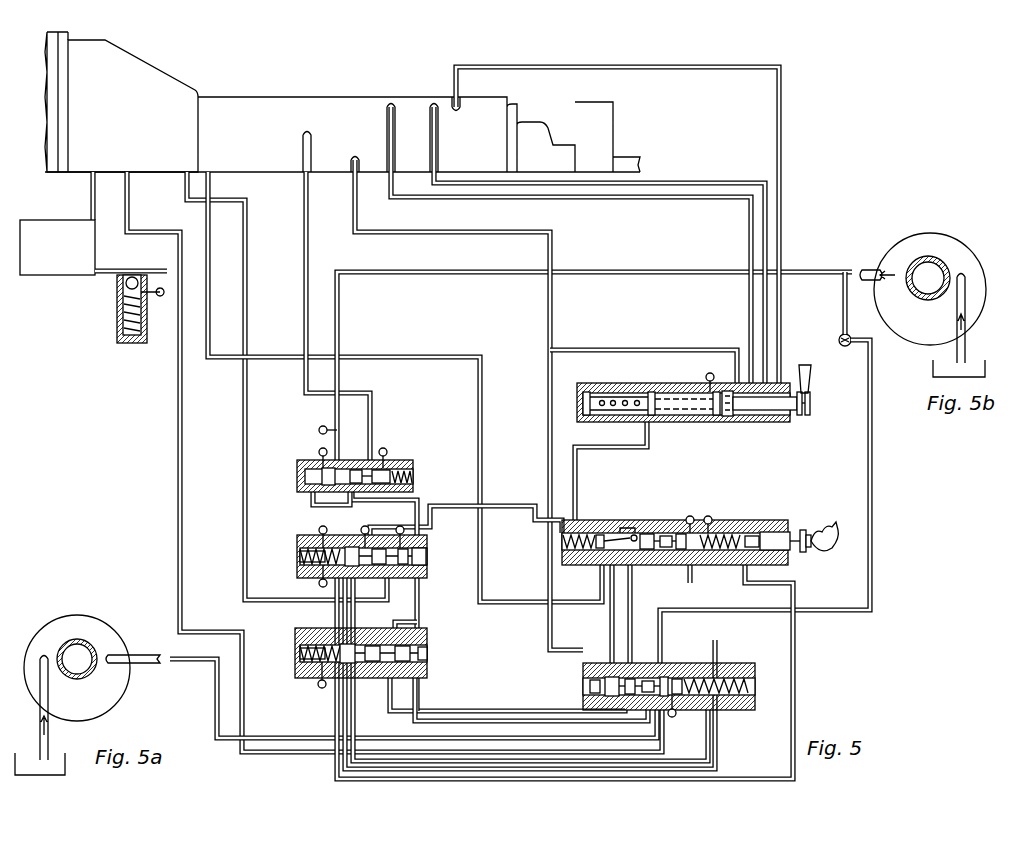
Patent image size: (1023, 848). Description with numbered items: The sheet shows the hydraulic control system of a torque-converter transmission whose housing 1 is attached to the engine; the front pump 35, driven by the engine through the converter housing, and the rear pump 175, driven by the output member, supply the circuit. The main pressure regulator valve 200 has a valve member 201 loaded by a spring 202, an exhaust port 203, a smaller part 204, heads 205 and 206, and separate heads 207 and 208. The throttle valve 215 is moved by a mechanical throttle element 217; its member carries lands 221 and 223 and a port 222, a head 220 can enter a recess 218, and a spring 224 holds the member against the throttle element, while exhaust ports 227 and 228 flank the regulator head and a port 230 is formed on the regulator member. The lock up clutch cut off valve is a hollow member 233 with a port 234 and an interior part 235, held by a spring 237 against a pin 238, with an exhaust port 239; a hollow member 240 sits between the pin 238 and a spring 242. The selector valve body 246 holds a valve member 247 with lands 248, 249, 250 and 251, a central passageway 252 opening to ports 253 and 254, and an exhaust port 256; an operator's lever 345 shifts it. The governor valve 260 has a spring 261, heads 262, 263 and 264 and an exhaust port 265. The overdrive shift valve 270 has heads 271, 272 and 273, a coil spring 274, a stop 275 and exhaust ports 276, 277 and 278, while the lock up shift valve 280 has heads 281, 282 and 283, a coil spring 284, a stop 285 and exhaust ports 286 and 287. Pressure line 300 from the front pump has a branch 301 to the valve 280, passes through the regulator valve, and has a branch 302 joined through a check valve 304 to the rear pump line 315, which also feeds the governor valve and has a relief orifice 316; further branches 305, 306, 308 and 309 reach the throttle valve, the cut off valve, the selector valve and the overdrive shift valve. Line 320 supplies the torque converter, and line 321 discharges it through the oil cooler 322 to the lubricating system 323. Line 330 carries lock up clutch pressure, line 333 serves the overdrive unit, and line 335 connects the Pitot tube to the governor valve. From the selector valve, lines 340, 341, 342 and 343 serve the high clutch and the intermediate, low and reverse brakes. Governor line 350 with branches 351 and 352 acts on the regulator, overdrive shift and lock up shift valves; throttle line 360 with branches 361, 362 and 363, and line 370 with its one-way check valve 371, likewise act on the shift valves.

In FIG. 5, the housing 1 is at (116, 62).
In FIG. 5a, the pump 35 is at (92, 628).
In FIG. 5b, the pump 175 is at (955, 252).
In FIG. 5, the main pressure regulator valve 200 is at (728, 712).
In FIG. 5, the valve member 201 is at (690, 660).
In FIG. 5, the spring 202 is at (740, 708).
In FIG. 5, the exhaust port 203 is at (676, 716).
In FIG. 5, the smaller part 204 is at (664, 676).
In FIG. 5, the head 205 is at (650, 680).
In FIG. 5, the head 206 is at (630, 678).
In FIG. 5, the head or valve member 207 is at (610, 676).
In FIG. 5, the head or valve member 208 is at (588, 687).
In FIG. 5, the throttle valve 215 is at (790, 565).
In FIG. 5, the mechanical element 217 is at (833, 540).
In FIG. 5, the recess 218 is at (803, 528).
In FIG. 5, the head 220 is at (812, 560).
In FIG. 5, the head or land 221 is at (778, 532).
In FIG. 5, the port 222 is at (752, 534).
In FIG. 5, the head or land 223 is at (758, 565).
In FIG. 5, the spring 224 is at (738, 534).
In FIG. 5, the exhaust port 227 is at (710, 516).
In FIG. 5, the exhaust port 228 is at (692, 516).
In FIG. 5, the port 230 is at (686, 552).
In FIG. 5, the hollow member 233 is at (614, 580).
In FIG. 5, the port 234 is at (626, 528).
In FIG. 5, the interior part 235 is at (628, 533).
In FIG. 5, the spring 237 is at (575, 551).
In FIG. 5, the pin 238 is at (678, 532).
In FIG. 5, the exhaust port 239 is at (598, 551).
In FIG. 5, the member 240 is at (662, 534).
In FIG. 5, the spring 242 is at (645, 552).
In FIG. 5, the body 246 is at (582, 385).
In FIG. 5, the valve member 247 is at (812, 409).
In FIG. 5, the land 248 is at (590, 392).
In FIG. 5, the land 249 is at (650, 392).
In FIG. 5, the land 250 is at (716, 416).
In FIG. 5, the land 251 is at (724, 418).
In FIG. 5, the central passageway 252 is at (682, 392).
In FIG. 5, the ports 253 is at (616, 410).
In FIG. 5, the ports 254 is at (733, 412).
In FIG. 5, the exhaust port 256 is at (716, 372).
In FIG. 5, the governor valve 260 is at (413, 466).
In FIG. 5, the spring 261 is at (414, 473).
In FIG. 5, the head 262 is at (378, 452).
In FIG. 5, the head 263 is at (338, 460).
In FIG. 5, the head 264 is at (330, 475).
In FIG. 5, the exhaust port 265 is at (386, 450).
In FIG. 5, the overdrive shift valve 270 is at (422, 540).
In FIG. 5, the head 271 is at (420, 559).
In FIG. 5, the head 272 is at (376, 566).
In FIG. 5, the head 273 is at (366, 598).
In FIG. 5, the coil spring 274 is at (300, 548).
In FIG. 5, the stop 275 is at (300, 556).
In FIG. 5, the exhaust port 276 is at (403, 528).
In FIG. 5, the exhaust port 277 is at (361, 526).
In FIG. 5, the exhaust port 278 is at (319, 527).
In FIG. 5, the lock up shift valve 280 is at (424, 664).
In FIG. 5, the head or land 281 is at (420, 650).
In FIG. 5, the head 282 is at (368, 632).
In FIG. 5, the head 283 is at (360, 666).
In FIG. 5, the coil spring 284 is at (300, 645).
In FIG. 5, the stop 285 is at (300, 656).
In FIG. 5, the exhaust port 286 is at (395, 632).
In FIG. 5, the exhaust port 287 is at (318, 687).
In FIG. 5, the pressure line 300 is at (660, 744).
In FIG. 5a, the pressure line 300 is at (147, 665).
In FIG. 5, the branch 301 is at (377, 714).
In FIG. 5, the branch 302 is at (858, 352).
In FIG. 5, the check valve 304 is at (838, 340).
In FIG. 5, the branch 305 is at (616, 606).
In FIG. 5, the branch 306 is at (620, 592).
In FIG. 5, the line 308 is at (650, 440).
In FIG. 5, the branch 309 is at (375, 528).
In FIG. 5, the pressure line 315 is at (334, 406).
In FIG. 5b, the pressure line 315 is at (870, 268).
In FIG. 5, the relief orifice 316 is at (318, 430).
In FIG. 5, the line 320 is at (128, 170).
In FIG. 5, the line 321 is at (88, 170).
In FIG. 5, the oil cooler 322 is at (44, 207).
In FIG. 5, the lubricating system 323 is at (164, 270).
In FIG. 5, the line 330 is at (212, 183).
In FIG. 5, the line 333 is at (184, 180).
In FIG. 5, the line 335 is at (310, 240).
In FIG. 5, the line 340 is at (358, 212).
In FIG. 5, the line 341 is at (430, 198).
In FIG. 5, the line 342 is at (440, 166).
In FIG. 5, the line 343 is at (495, 66).
In FIG. 5, the shift lever 345 is at (812, 380).
In FIG. 5, the line 350 is at (410, 500).
In FIG. 5, the branch 351 is at (310, 499).
In FIG. 5, the branch 352 is at (420, 624).
In FIG. 5, the pressure line 360 is at (342, 611).
In FIG. 5, the branch 361 is at (690, 580).
In FIG. 5, the branch 362 is at (680, 520).
In FIG. 5, the branch 363 is at (748, 570).
In FIG. 5, the pressure line 370 is at (336, 702).
In FIG. 5, the check valve 371 is at (319, 586).